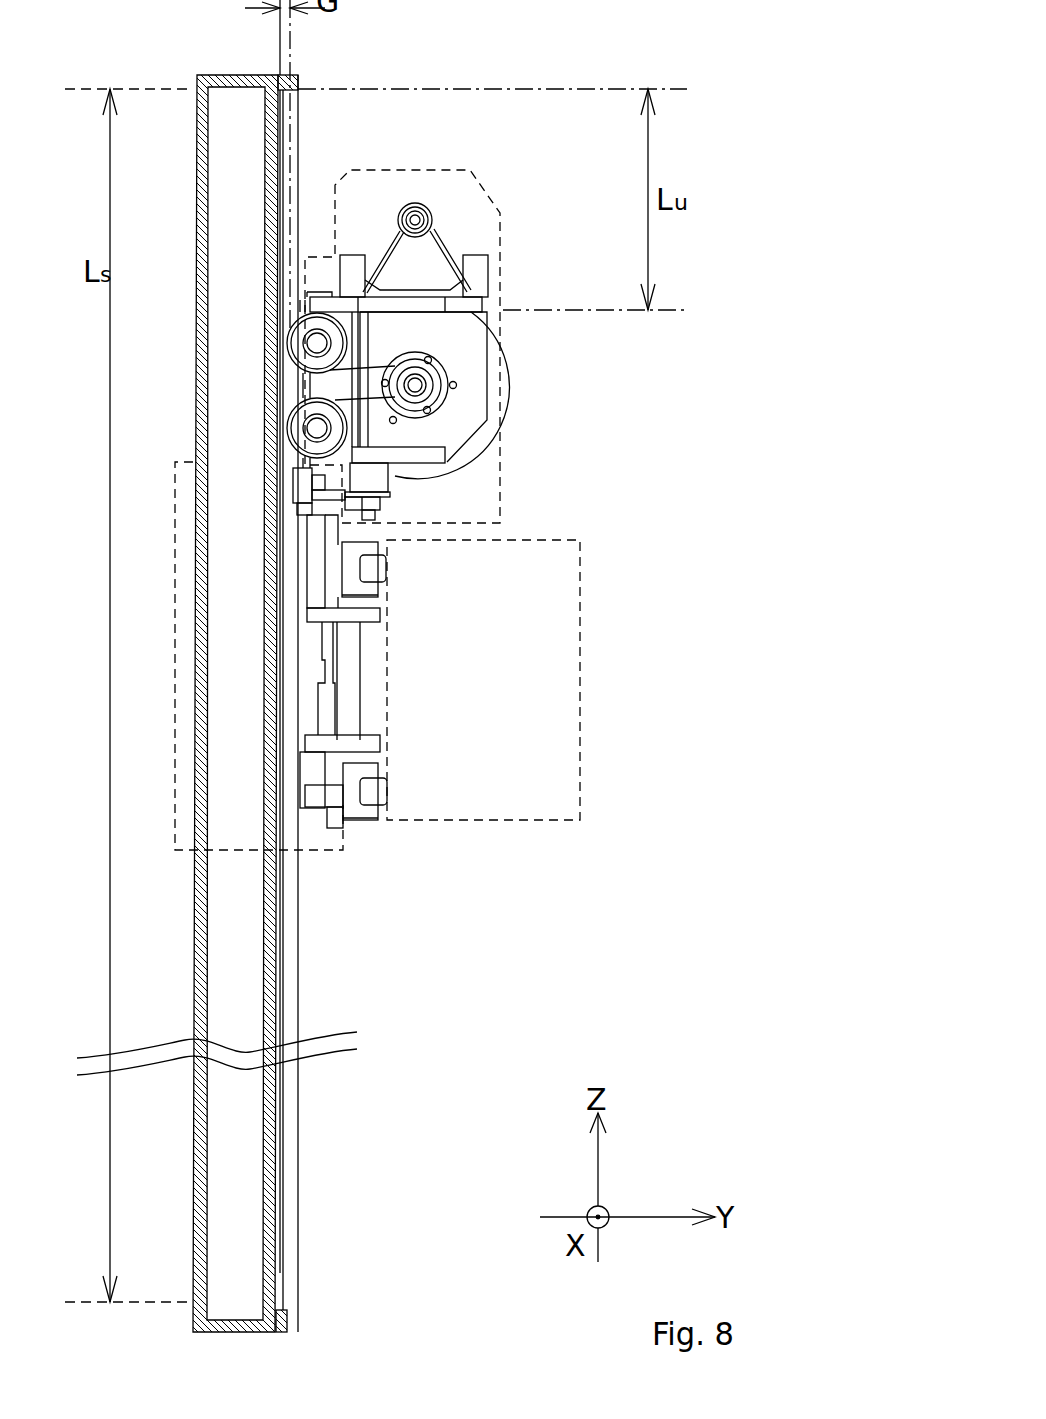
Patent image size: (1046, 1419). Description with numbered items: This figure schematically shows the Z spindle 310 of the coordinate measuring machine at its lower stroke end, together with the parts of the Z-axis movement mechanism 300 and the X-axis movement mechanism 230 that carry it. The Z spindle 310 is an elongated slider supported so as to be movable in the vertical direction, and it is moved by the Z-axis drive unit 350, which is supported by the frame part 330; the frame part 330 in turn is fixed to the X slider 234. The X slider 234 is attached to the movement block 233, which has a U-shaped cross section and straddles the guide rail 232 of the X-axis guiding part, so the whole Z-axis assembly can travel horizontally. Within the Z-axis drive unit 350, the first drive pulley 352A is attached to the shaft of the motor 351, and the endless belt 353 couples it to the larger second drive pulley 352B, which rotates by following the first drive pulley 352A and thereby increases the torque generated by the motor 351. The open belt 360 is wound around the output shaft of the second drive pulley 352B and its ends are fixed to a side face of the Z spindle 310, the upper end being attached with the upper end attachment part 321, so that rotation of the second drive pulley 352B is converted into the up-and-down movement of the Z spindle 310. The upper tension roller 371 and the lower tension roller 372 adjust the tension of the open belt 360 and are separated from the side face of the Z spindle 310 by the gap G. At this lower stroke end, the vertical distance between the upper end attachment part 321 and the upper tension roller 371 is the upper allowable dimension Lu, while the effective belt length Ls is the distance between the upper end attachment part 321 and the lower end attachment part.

The X-axis movement mechanism 230 is at (570, 618).
The guide rail 232 is at (388, 568).
The movement block 233 is at (378, 560).
The X slider 234 is at (313, 840).
The Z-axis movement mechanism 300 is at (505, 292).
The Z spindle 310 is at (200, 318).
The upper end attachment part 321 is at (330, 50).
The frame part 330 is at (480, 487).
The Z-axis drive unit 350 is at (530, 346).
The motor 351 is at (509, 175).
The first drive pulley 352A is at (425, 207).
The second drive pulley 352B is at (493, 397).
The endless belt 353 is at (445, 252).
The open belt 360 is at (281, 180).
The upper tension roller 371 is at (303, 343).
The lower tension roller 372 is at (290, 400).